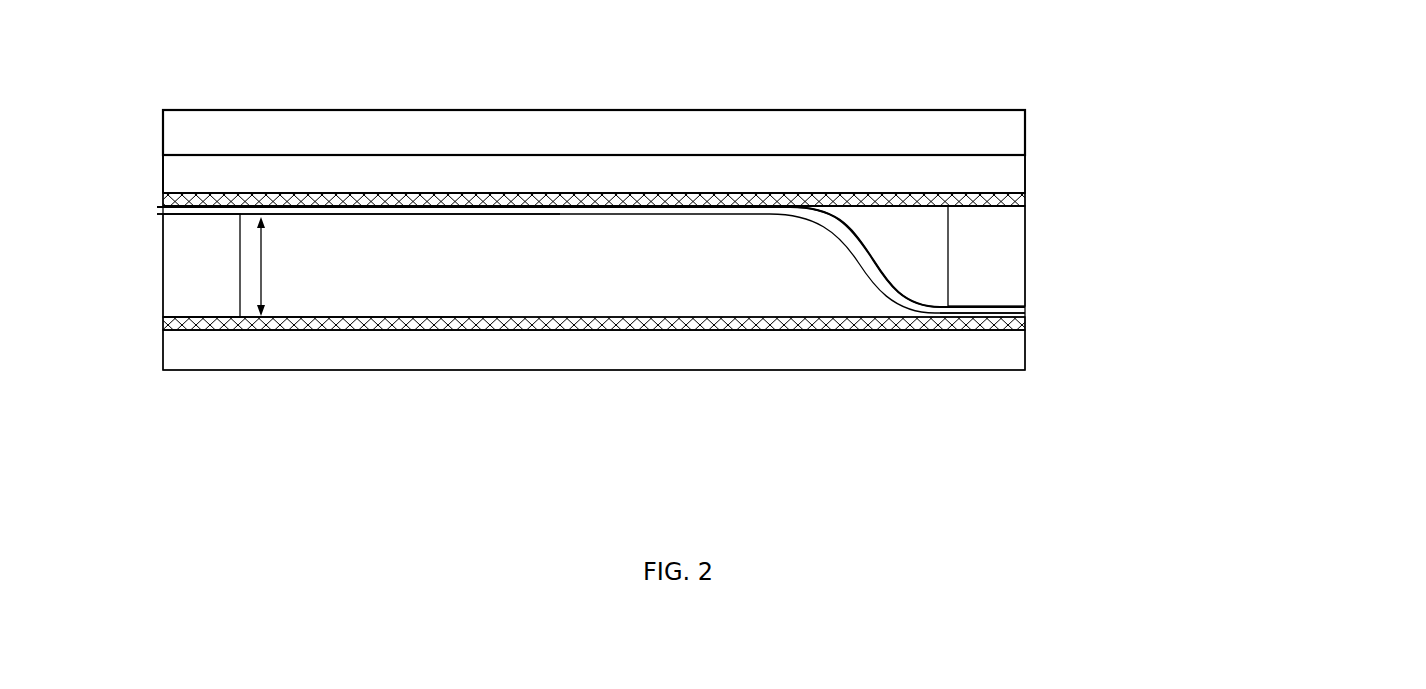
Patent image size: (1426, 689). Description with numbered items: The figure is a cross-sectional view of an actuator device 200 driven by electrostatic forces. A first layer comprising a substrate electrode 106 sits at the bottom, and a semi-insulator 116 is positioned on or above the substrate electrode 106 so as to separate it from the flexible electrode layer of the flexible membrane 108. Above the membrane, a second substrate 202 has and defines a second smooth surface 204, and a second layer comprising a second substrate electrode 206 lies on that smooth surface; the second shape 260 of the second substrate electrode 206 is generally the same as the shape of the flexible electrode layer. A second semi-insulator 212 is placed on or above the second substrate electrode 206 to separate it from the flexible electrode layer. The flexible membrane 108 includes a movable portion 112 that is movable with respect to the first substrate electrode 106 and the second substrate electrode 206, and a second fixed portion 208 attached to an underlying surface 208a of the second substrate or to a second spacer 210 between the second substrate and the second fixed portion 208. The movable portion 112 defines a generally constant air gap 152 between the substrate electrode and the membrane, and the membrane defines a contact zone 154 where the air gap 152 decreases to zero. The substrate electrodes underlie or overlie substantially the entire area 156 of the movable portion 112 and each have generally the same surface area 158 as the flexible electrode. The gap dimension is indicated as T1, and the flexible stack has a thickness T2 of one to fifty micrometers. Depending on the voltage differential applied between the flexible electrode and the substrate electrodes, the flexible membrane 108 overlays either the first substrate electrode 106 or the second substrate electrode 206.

The actuator device 200 is at (1157, 65).
The second substrate 202 is at (564, 101).
The second smooth surface 204 is at (884, 118).
The second substrate electrode 206 is at (572, 175).
The second shape 260 is at (1005, 131).
The second semi-insulator 212 is at (1003, 200).
The semi-insulator 116 is at (985, 325).
The substrate electrode 106 is at (580, 352).
The second spacer 210 is at (980, 250).
The flexible membrane 108 is at (872, 275).
The air gap 152 is at (262, 231).
The contact zone 154 is at (647, 214).
The entire area of the movable portion 156 is at (502, 216).
The surface area 158 is at (336, 318).
The movable portion 112 is at (884, 300).
The second fixed portion 208 is at (978, 323).
The underlying surface of the second substrate 208a is at (986, 312).
The gap thickness T1 is at (137, 242).
The thickness T2 is at (885, 214).